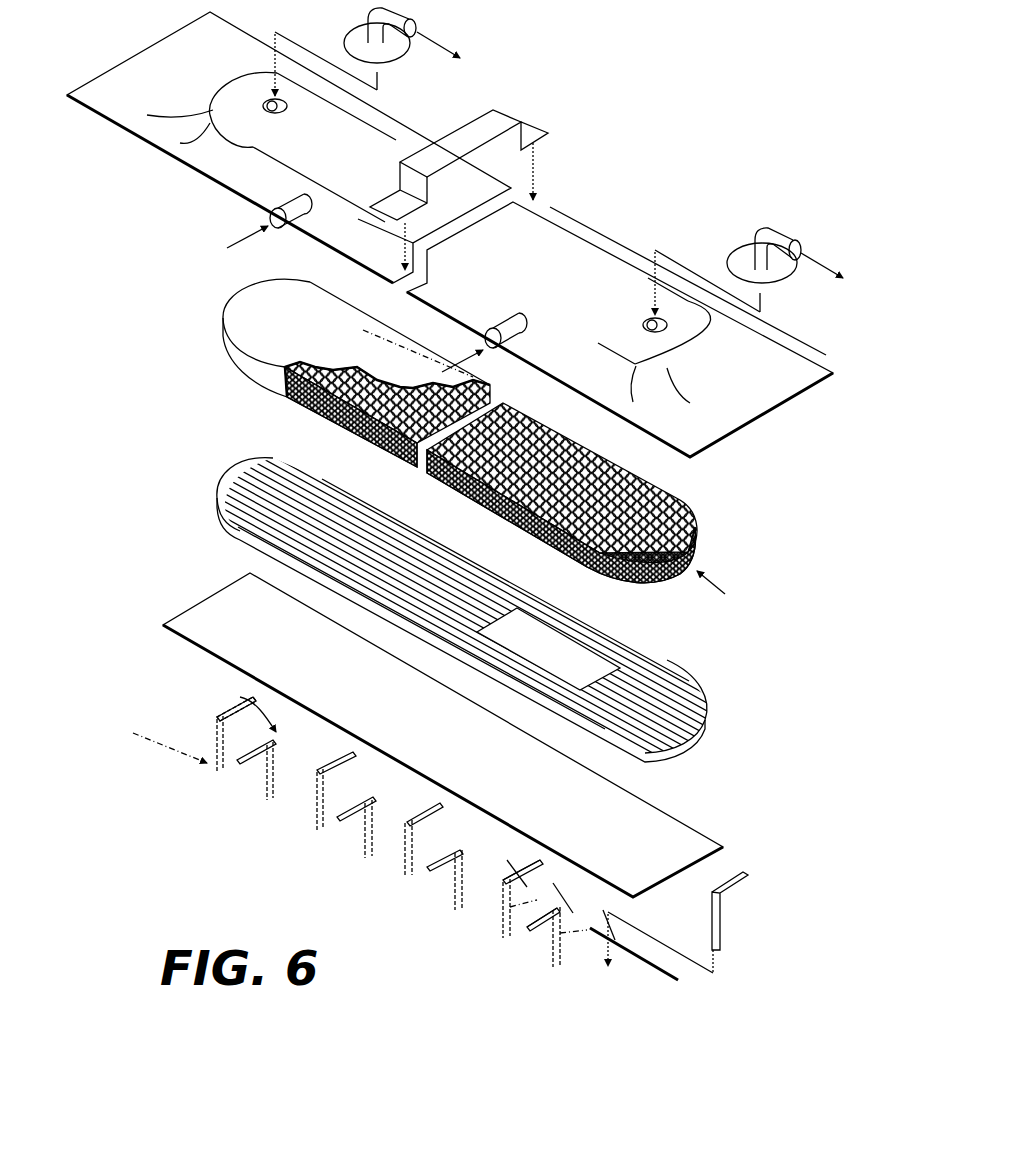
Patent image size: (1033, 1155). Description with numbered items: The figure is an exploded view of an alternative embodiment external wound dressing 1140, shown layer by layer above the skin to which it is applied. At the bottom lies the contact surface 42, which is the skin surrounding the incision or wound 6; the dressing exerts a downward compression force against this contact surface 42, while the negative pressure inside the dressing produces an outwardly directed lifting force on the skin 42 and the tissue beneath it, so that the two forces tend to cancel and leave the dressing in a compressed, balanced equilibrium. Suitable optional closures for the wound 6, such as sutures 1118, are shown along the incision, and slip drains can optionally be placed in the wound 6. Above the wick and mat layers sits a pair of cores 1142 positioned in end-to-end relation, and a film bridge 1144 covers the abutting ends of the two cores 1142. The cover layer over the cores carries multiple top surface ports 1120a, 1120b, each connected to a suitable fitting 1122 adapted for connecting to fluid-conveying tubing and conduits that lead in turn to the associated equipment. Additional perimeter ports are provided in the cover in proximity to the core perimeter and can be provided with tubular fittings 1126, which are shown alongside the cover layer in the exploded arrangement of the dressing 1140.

The external wound dressing 1140 is at (690, 102).
The film bridge 1144 is at (494, 108).
The top surface port 1120a is at (283, 107).
The top surface port 1120b is at (645, 326).
The fitting 1122 is at (756, 233).
The tubular fitting 1126 is at (285, 197).
The core 1142 is at (320, 413).
The sutures 1118 is at (490, 874).
The wound 6 is at (458, 828).
The contact surface 42 is at (540, 970).